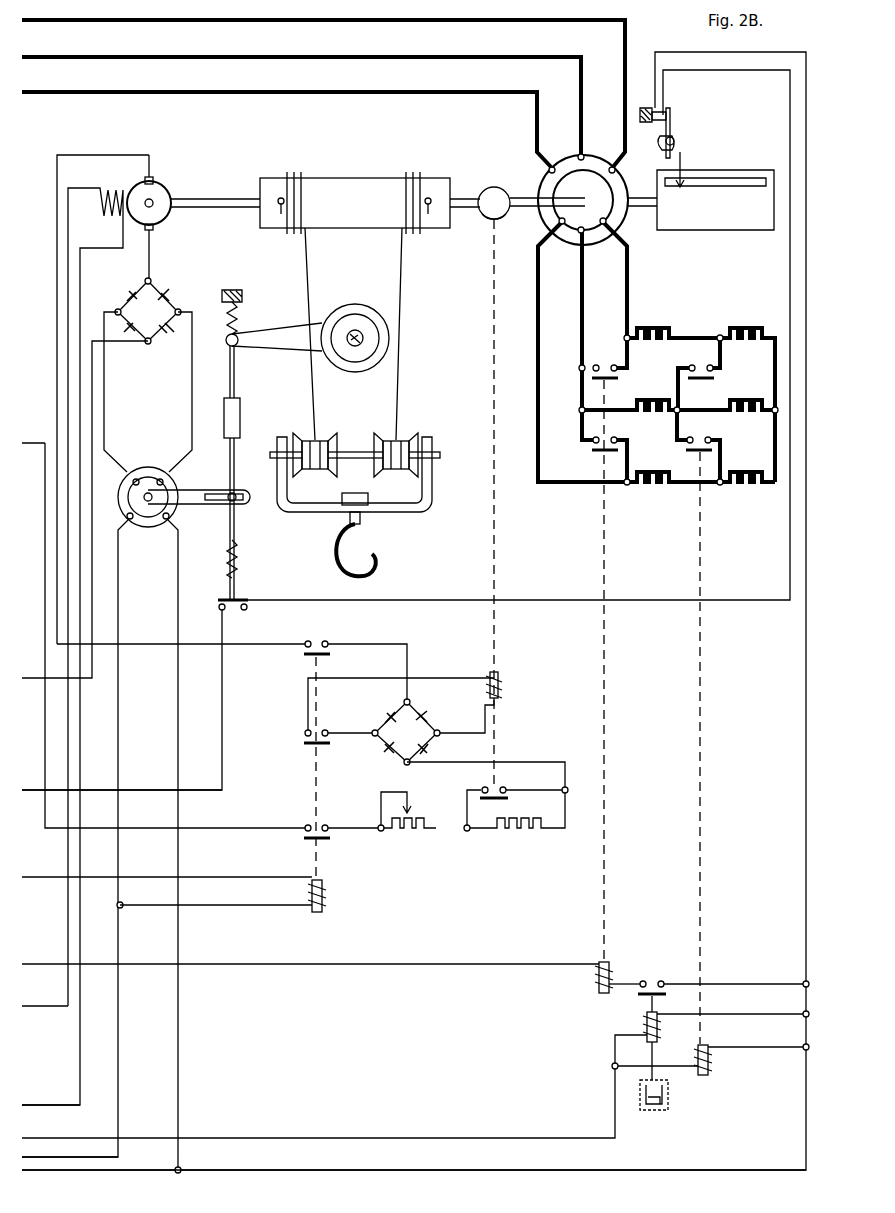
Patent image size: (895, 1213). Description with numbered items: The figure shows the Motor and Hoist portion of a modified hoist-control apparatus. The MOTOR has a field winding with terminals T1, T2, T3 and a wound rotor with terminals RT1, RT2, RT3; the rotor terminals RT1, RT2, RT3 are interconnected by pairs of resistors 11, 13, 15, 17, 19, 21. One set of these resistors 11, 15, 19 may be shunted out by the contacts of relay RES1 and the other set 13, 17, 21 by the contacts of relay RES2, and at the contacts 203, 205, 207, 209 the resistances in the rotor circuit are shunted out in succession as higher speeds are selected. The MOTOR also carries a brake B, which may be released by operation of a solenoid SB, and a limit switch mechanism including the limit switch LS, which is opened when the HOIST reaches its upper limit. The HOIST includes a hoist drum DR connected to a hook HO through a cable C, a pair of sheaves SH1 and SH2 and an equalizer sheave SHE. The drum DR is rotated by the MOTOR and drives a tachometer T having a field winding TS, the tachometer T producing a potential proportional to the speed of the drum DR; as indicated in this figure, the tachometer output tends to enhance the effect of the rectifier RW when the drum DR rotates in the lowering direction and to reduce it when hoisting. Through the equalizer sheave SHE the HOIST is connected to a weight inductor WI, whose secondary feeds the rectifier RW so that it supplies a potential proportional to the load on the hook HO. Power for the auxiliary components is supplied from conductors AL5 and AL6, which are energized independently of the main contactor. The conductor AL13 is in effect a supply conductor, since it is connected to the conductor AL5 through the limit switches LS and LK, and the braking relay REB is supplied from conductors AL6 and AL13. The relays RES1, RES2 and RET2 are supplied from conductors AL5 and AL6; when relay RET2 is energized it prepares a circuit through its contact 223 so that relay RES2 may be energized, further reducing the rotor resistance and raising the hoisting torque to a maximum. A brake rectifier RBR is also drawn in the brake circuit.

The tachometer T is at (160, 189).
The field winding TS is at (104, 208).
The hoist drum DR is at (374, 177).
The brake B is at (490, 186).
The field winding terminal T1 is at (612, 166).
The field winding terminal T2 is at (578, 154).
The field winding terminal T3 is at (549, 170).
The rotor terminal RT1 is at (603, 225).
The rotor terminal RT2 is at (578, 233).
The rotor terminal RT3 is at (560, 223).
The Motor MOTOR is at (626, 232).
The limit switch LS is at (672, 118).
The rectifier RW is at (170, 306).
The equalizer sheave SHE is at (360, 305).
The cable C is at (400, 283).
The Hoist HOIST is at (437, 347).
The weight inductor WI is at (143, 470).
The sheave SH1 is at (336, 438).
The sheave SH2 is at (414, 438).
The hook HO is at (376, 556).
The limit switch LK is at (244, 598).
The resistor 13 is at (653, 328).
The resistor 11 is at (746, 328).
The resistor 17 is at (660, 398).
The resistor 15 is at (752, 398).
The resistor 21 is at (640, 476).
The resistor 19 is at (754, 476).
The contact 209 is at (608, 360).
The contact 205 is at (701, 367).
The contact 207 is at (592, 445).
The contact 203 is at (704, 440).
The brake rectifier RBR is at (392, 728).
The solenoid SB is at (500, 690).
The conductor AL13 is at (224, 770).
The braking relay REB is at (326, 890).
The relay RES2 is at (596, 972).
The contact 223 is at (653, 982).
The relay RET2 is at (645, 1026).
The relay RES1 is at (710, 1062).
The conductor AL6 is at (120, 1090).
The conductor AL5 is at (224, 1171).